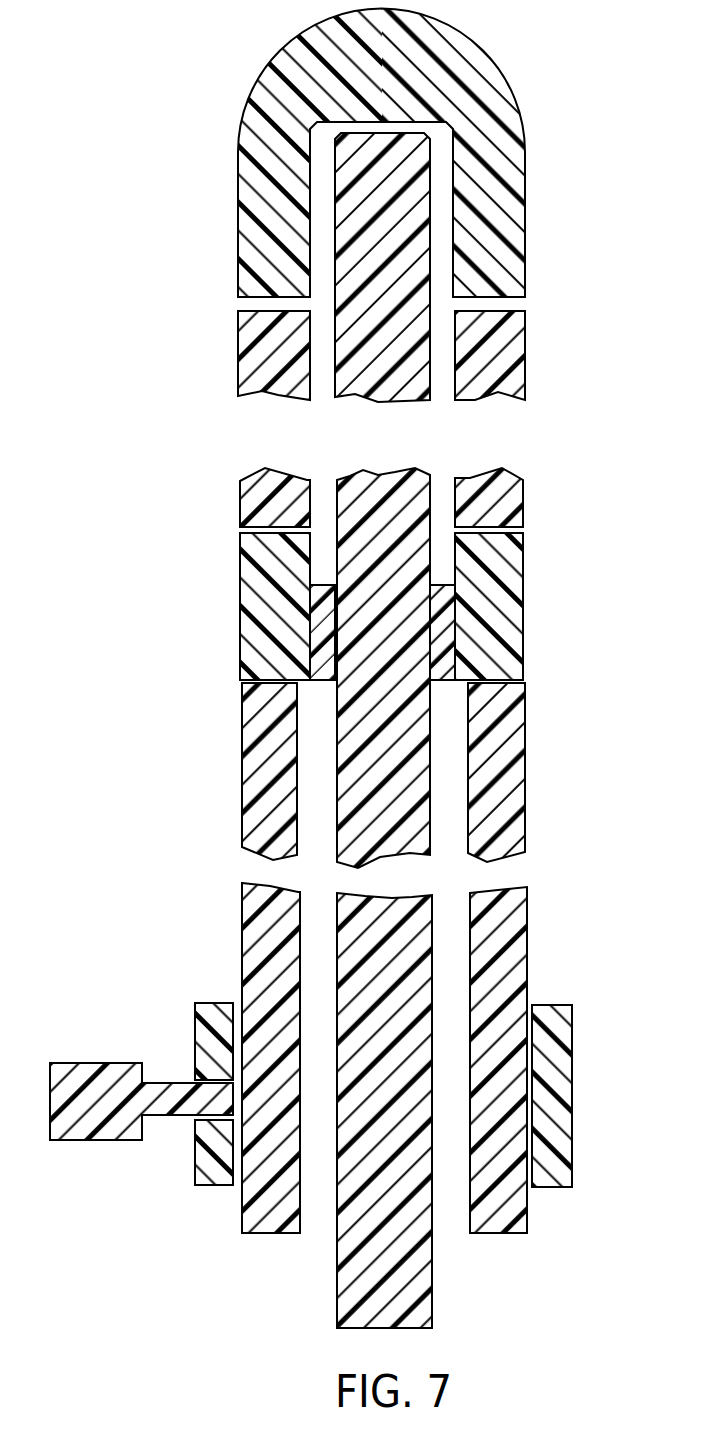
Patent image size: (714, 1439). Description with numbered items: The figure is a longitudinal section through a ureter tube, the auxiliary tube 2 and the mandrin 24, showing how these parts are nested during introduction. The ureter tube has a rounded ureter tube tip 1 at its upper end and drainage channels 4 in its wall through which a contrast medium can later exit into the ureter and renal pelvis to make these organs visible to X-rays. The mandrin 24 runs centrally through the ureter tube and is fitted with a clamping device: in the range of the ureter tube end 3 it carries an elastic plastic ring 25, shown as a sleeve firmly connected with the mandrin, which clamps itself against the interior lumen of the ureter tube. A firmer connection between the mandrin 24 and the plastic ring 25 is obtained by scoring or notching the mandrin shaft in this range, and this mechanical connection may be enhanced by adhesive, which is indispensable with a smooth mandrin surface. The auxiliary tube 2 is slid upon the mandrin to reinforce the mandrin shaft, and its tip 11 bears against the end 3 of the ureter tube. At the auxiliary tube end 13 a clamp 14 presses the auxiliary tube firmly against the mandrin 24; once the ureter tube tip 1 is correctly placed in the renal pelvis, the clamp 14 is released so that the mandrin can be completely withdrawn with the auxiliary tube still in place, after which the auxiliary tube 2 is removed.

The ureter tube tip 1 is at (395, 12).
The auxiliary tube 2 is at (240, 348).
The ureter tube end 3 is at (240, 588).
The drainage channels 4 is at (515, 303).
The tip of the auxiliary tube 11 is at (490, 702).
The auxiliary tube end 13 is at (500, 1207).
The clamp 14 is at (515, 655).
The mandrin 24 is at (420, 218).
The elastic plastic ring 25 is at (465, 606).